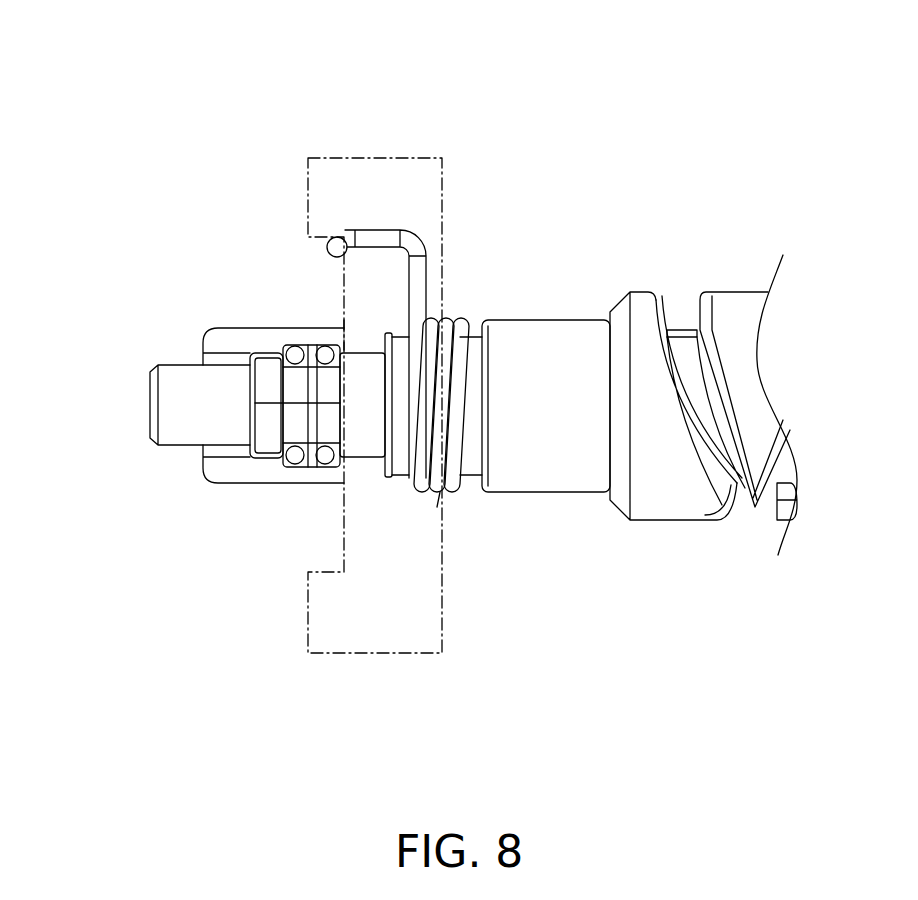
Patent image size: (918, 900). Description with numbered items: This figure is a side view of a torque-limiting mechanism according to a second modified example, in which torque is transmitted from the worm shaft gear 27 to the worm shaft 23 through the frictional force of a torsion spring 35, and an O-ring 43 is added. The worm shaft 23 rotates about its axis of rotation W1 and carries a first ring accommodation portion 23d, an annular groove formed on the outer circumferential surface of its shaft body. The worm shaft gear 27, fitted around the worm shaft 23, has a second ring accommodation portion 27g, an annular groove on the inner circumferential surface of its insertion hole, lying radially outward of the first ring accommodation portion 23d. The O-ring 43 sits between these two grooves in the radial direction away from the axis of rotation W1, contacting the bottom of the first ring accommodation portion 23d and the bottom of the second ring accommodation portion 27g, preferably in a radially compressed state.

The axis of rotation W1 is at (142, 405).
The worm shaft 23 is at (586, 281).
The first ring accommodation portion 23d is at (250, 403).
The worm shaft gear 27 is at (391, 150).
The second ring accommodation portion 27g is at (345, 337).
The torsion spring 35 is at (427, 224).
The O-ring 43 is at (327, 460).